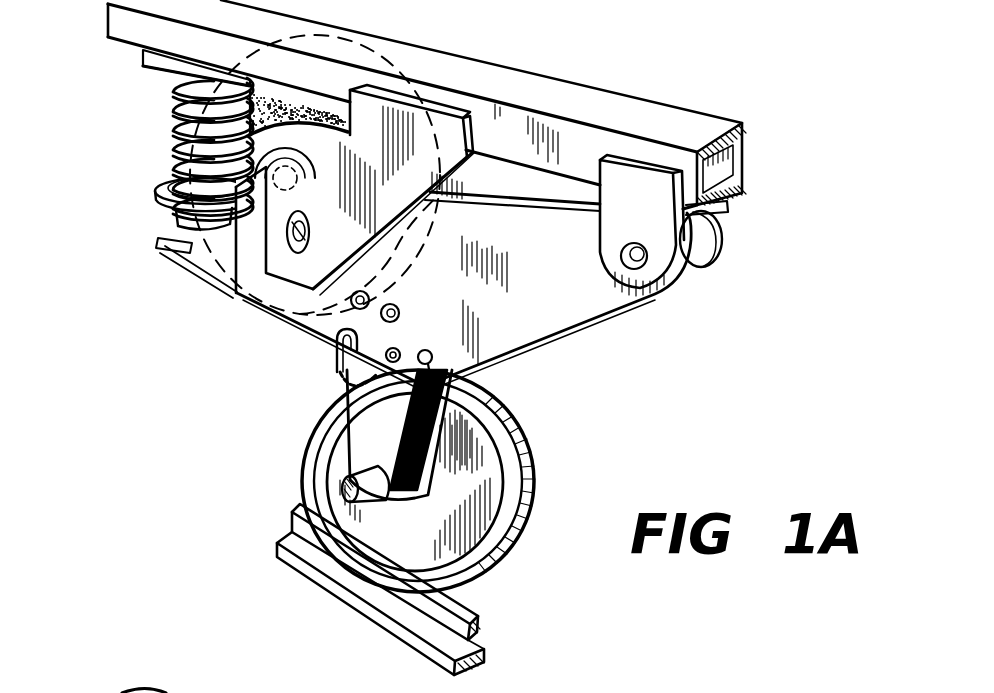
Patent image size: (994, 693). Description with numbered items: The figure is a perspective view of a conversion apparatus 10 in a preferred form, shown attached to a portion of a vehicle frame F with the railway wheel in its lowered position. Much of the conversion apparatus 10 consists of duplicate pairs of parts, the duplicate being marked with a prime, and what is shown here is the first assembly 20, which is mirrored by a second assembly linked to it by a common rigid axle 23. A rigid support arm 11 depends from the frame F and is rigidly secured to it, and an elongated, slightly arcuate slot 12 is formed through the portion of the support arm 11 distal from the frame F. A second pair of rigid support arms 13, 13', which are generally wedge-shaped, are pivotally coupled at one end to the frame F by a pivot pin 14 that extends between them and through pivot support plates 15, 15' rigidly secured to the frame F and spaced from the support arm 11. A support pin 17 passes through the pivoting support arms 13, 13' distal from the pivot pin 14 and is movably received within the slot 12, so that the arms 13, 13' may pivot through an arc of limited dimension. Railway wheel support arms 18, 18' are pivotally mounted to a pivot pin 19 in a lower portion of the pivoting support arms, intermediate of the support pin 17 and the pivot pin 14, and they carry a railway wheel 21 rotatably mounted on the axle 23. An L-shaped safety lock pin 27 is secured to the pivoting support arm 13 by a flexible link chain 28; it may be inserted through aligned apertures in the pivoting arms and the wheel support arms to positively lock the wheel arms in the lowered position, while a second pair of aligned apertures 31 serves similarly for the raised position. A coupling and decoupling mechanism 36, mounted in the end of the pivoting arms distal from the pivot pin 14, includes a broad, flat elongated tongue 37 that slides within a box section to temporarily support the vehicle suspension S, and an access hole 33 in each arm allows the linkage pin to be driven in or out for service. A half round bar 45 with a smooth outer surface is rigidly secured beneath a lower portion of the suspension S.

The vehicle frame F is at (577, 95).
The vehicle suspension S is at (160, 128).
The conversion apparatus 10 is at (170, 489).
The rigid support arm 11 is at (446, 128).
The elongated slot 12 is at (300, 258).
The pivoting support arm 13 is at (464, 282).
The pivoting support arm 13' is at (726, 240).
The pivot pin 14 is at (620, 253).
The pivot support plate 15 is at (614, 221).
The pivot support plate 15' is at (749, 214).
The support pin 17 is at (311, 230).
The railway wheel support arm 18 is at (399, 435).
The railway wheel support arm 18' is at (452, 460).
The pivot pin 19 is at (394, 310).
The first assembly 20 is at (648, 451).
The railway wheel 21 is at (453, 582).
The axle 23 is at (375, 502).
The L-shaped safety lock pin 27 is at (338, 359).
The flexible link chain 28 is at (398, 350).
The aligned apertures 31 is at (420, 400).
The access hole 33 is at (386, 255).
The coupling and decoupling mechanism 36 is at (176, 302).
The tongue 37 is at (197, 259).
The half round bar 45 is at (162, 245).